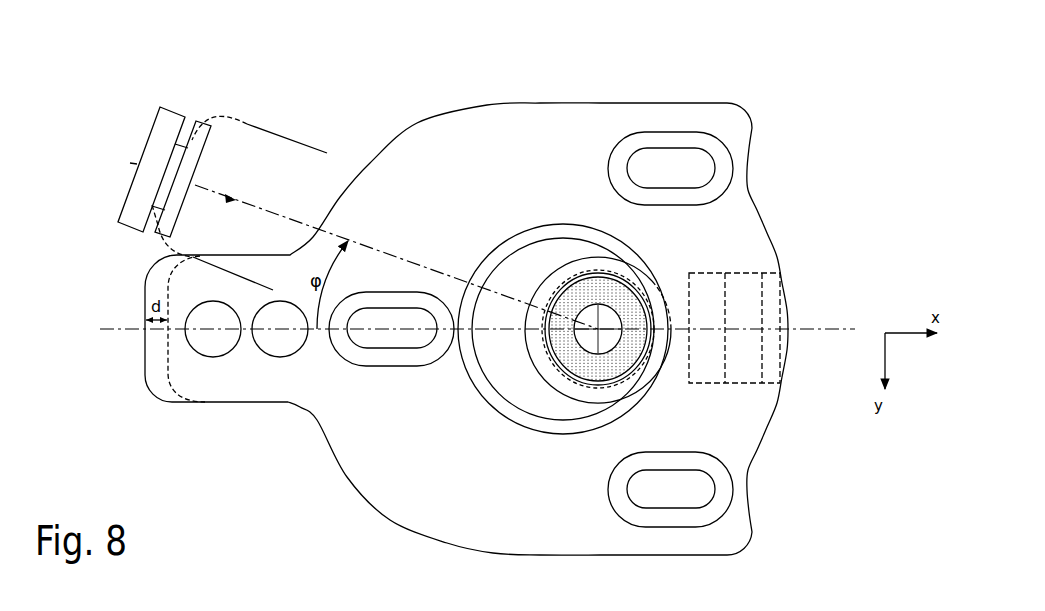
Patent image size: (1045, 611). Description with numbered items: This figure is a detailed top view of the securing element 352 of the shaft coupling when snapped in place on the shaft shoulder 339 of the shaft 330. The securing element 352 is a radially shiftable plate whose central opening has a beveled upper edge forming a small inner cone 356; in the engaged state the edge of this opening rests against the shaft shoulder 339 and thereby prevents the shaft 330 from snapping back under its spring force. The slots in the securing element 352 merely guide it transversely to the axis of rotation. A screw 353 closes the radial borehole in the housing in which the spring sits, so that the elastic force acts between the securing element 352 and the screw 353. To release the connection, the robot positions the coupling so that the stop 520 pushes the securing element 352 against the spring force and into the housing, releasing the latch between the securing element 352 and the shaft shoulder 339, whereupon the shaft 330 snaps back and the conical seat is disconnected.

The securing element 352 is at (445, 90).
The stop 520 is at (157, 152).
The inner cone 356 is at (550, 228).
The shaft 330 is at (598, 329).
The shaft shoulder 339 is at (572, 382).
The screw 353 is at (748, 383).